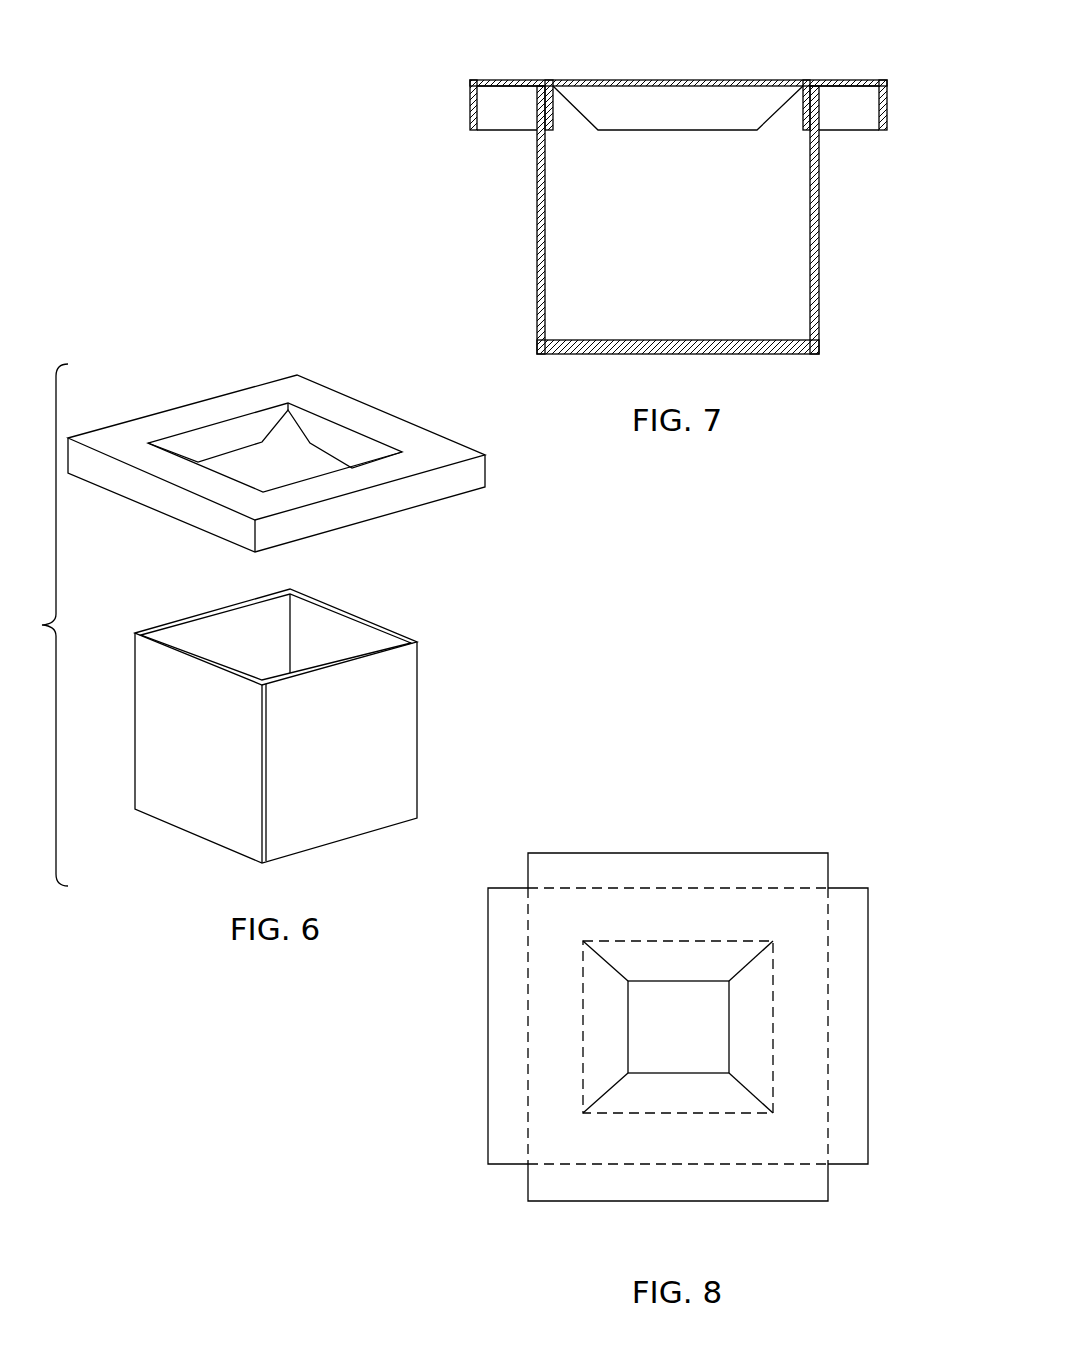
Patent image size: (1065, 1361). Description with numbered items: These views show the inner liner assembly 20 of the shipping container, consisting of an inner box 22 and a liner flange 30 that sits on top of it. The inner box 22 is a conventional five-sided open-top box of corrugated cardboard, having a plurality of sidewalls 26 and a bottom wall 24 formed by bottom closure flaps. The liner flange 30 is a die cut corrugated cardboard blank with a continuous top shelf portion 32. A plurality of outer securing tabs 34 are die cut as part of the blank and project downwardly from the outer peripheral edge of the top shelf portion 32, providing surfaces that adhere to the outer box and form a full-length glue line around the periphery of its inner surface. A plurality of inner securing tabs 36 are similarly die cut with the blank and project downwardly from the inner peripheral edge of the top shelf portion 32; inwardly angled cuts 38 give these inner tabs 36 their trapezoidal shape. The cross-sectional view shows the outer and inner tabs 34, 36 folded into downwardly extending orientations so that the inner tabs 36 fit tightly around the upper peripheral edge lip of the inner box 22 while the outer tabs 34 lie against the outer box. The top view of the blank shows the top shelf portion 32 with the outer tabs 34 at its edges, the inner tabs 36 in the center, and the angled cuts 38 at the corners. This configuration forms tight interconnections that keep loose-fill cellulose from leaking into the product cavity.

In FIG. 6, the inner liner assembly 20 is at (37, 625).
In FIG. 7, the inner box 22 is at (823, 184).
In FIG. 6, the inner box 22 is at (431, 704).
In FIG. 7, the bottom wall 24 is at (636, 338).
In FIG. 7, the sidewalls 26 is at (537, 213).
In FIG. 6, the sidewalls 26 is at (233, 650).
In FIG. 7, the liner flange 30 is at (466, 76).
In FIG. 6, the liner flange 30 is at (403, 410).
In FIG. 8, the liner flange 30 is at (518, 1178).
In FIG. 7, the top shelf portion 32 is at (508, 80).
In FIG. 6, the top shelf portion 32 is at (240, 400).
In FIG. 8, the top shelf portion 32 is at (795, 913).
In FIG. 7, the outer securing tabs 34 is at (887, 106).
In FIG. 6, the outer securing tabs 34 is at (190, 515).
In FIG. 8, the outer securing tabs 34 is at (590, 863).
In FIG. 7, the inner securing tabs 36 is at (550, 107).
In FIG. 6, the inner securing tabs 36 is at (198, 453).
In FIG. 8, the inner securing tabs 36 is at (683, 948).
In FIG. 8, the inwardly angled cuts 38 is at (612, 973).